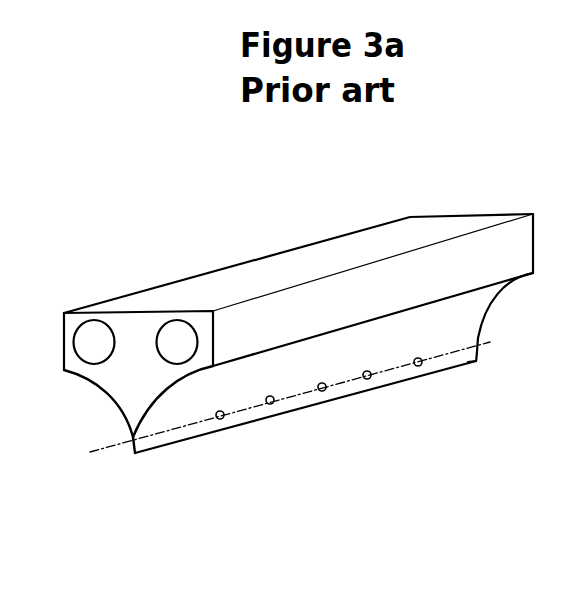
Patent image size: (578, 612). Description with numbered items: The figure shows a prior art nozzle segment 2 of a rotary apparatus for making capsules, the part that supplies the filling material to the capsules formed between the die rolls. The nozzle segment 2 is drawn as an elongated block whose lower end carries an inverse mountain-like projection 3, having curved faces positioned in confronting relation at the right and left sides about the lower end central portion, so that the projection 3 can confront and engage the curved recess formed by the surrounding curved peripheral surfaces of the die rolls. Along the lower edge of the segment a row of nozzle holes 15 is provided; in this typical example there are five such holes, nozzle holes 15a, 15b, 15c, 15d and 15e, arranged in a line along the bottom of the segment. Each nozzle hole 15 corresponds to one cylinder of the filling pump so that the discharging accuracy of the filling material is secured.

The nozzle segment 2 is at (483, 214).
The inverse mountain-like projection 3 is at (475, 308).
The nozzle hole 15 is at (334, 452).
The first nozzle hole 15a is at (222, 419).
The second nozzle hole 15b is at (271, 404).
The third nozzle hole 15c is at (323, 391).
The fourth nozzle hole 15d is at (368, 379).
The fifth nozzle hole 15e is at (486, 408).